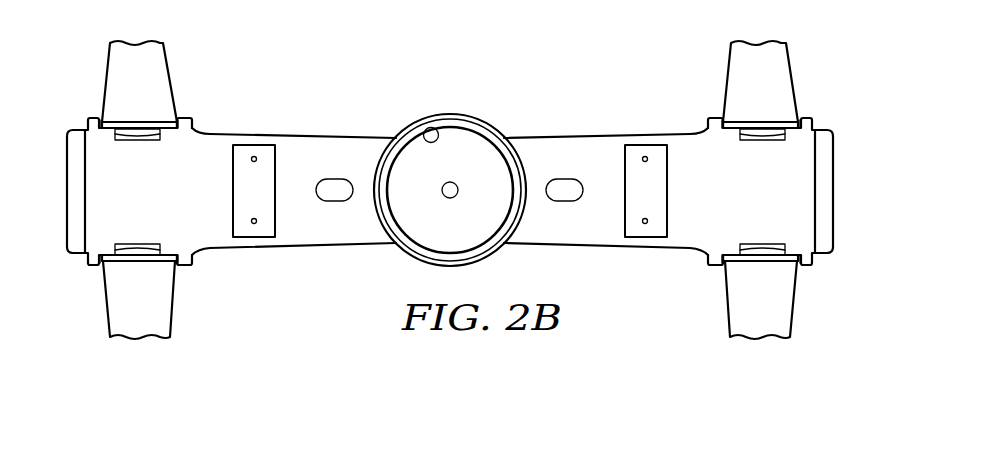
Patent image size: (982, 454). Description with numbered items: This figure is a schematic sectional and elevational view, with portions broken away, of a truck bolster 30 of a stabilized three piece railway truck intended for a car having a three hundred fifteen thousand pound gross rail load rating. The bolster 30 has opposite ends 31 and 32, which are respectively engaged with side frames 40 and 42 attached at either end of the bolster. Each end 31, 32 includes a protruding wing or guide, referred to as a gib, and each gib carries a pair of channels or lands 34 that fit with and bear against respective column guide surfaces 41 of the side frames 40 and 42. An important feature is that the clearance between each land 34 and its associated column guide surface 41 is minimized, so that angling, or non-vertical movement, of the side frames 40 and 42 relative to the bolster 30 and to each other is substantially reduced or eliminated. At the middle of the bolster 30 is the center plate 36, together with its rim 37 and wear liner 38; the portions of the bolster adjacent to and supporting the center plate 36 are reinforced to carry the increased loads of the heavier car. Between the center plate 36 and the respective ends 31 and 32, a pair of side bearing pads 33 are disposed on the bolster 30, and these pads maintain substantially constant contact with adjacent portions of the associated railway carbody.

The bolster 30 is at (560, 126).
The end of bolster 31 is at (805, 195).
The end of bolster 32 is at (95, 198).
The side bearing pad 33 is at (276, 168).
The land 34 is at (177, 121).
The center plate 36 is at (483, 114).
The rim 37 is at (516, 153).
The wear liner 38 is at (424, 132).
The side frame 40 is at (800, 50).
The column guide surface 41 is at (136, 130).
The side frame 42 is at (178, 52).